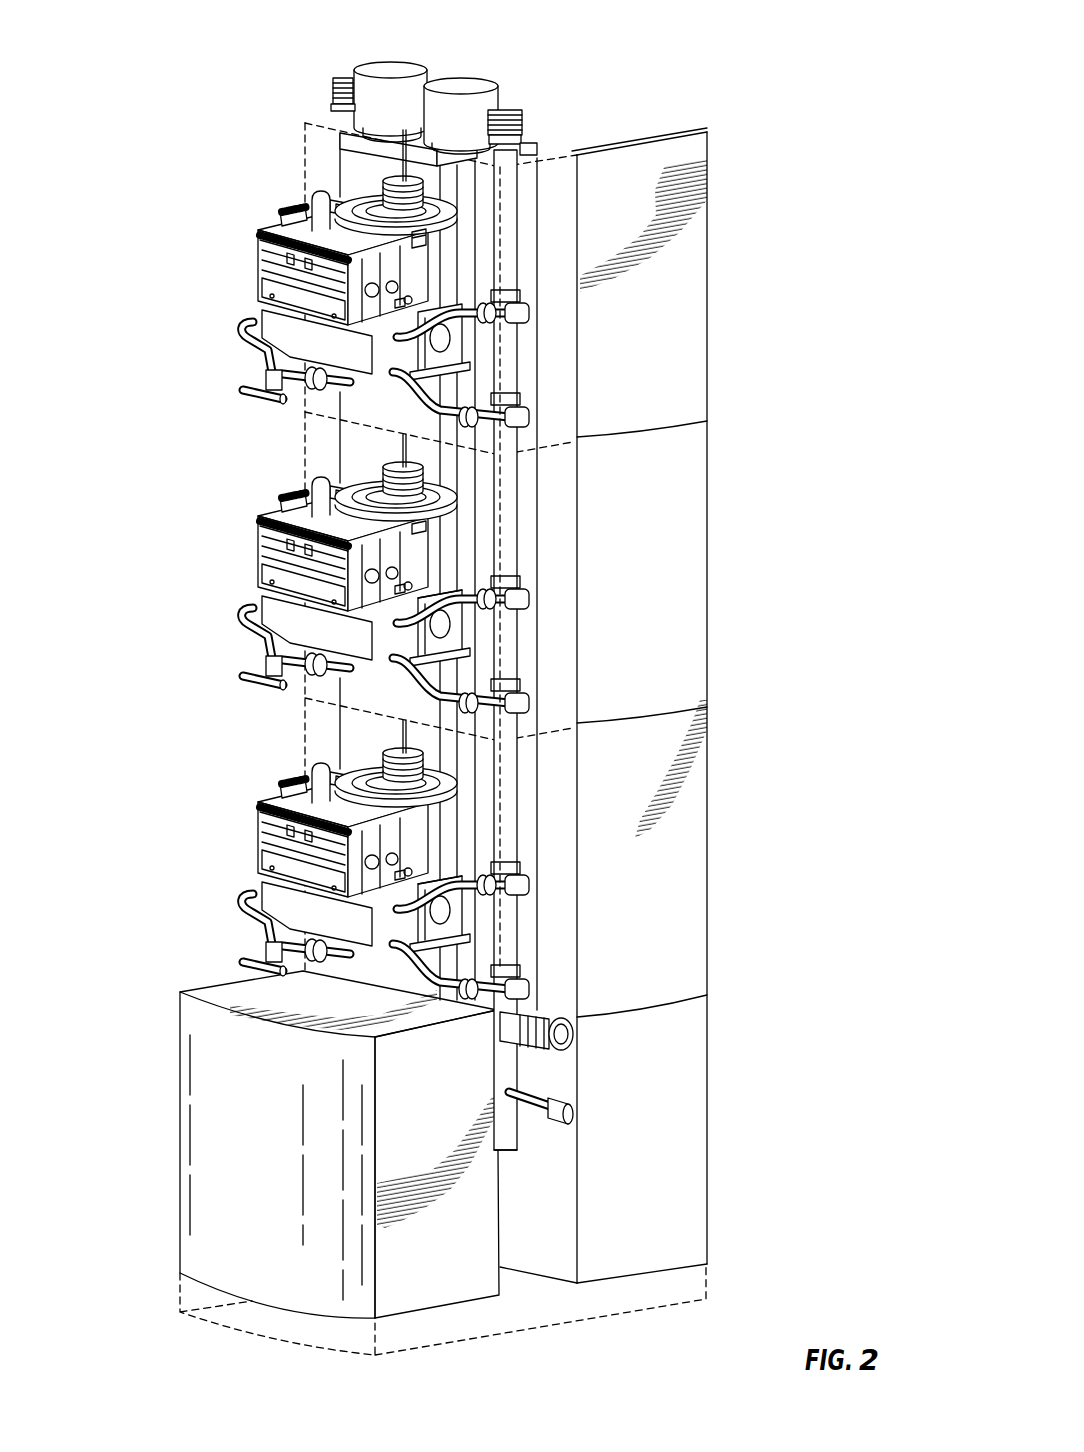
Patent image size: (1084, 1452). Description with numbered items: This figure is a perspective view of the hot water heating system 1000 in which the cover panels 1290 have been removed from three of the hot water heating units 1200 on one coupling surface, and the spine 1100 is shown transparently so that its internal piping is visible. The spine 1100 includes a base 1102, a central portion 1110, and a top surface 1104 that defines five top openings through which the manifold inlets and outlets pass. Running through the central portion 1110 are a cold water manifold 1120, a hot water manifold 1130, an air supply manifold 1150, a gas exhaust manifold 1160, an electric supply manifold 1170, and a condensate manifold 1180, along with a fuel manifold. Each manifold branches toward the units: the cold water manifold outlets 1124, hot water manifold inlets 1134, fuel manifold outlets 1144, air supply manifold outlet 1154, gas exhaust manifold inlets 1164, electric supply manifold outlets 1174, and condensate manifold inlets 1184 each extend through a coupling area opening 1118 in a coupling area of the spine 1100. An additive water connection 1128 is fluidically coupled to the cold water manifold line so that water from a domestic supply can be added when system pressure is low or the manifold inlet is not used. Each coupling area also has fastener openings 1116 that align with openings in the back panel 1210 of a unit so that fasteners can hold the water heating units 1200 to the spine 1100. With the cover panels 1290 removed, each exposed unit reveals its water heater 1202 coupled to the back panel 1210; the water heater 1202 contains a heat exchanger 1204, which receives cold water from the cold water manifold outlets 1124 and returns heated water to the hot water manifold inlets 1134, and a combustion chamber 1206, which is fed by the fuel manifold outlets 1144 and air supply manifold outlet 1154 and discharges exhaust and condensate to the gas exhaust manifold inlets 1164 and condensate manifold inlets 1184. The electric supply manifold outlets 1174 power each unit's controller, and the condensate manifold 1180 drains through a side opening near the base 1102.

The hot water heating system 1000 is at (500, 692).
The spine 1100 is at (602, 1325).
The base 1102 is at (553, 1226).
The top surface 1104 is at (557, 148).
The central portion 1110 is at (560, 883).
The fastener openings 1116 is at (430, 240).
The coupling area opening 1118 is at (470, 978).
The cold water manifold 1120 is at (513, 223).
The cold water manifold outlets 1124 is at (500, 472).
The additive water connection 1128 is at (571, 1038).
The hot water manifold 1130 is at (338, 176).
The hot water manifold inlets 1134 is at (255, 395).
The fuel manifold outlets 1144 is at (483, 320).
The air supply manifold 1150 is at (365, 158).
The air supply manifold outlet 1154 is at (383, 748).
The gas exhaust manifold 1160 is at (450, 180).
The gas exhaust manifold inlets 1164 is at (470, 775).
The electric supply manifold 1170 is at (432, 70).
The electric supply manifold outlets 1174 is at (440, 567).
The condensate manifold 1180 is at (552, 1093).
The condensate manifold inlets 1184 is at (462, 640).
The water heating units 1200 is at (474, 564).
The water heater 1202 is at (245, 262).
The heat exchanger 1204 is at (258, 290).
The combustion chamber 1206 is at (300, 378).
The back panel 1210 is at (400, 742).
The cover panels 1290 is at (688, 724).